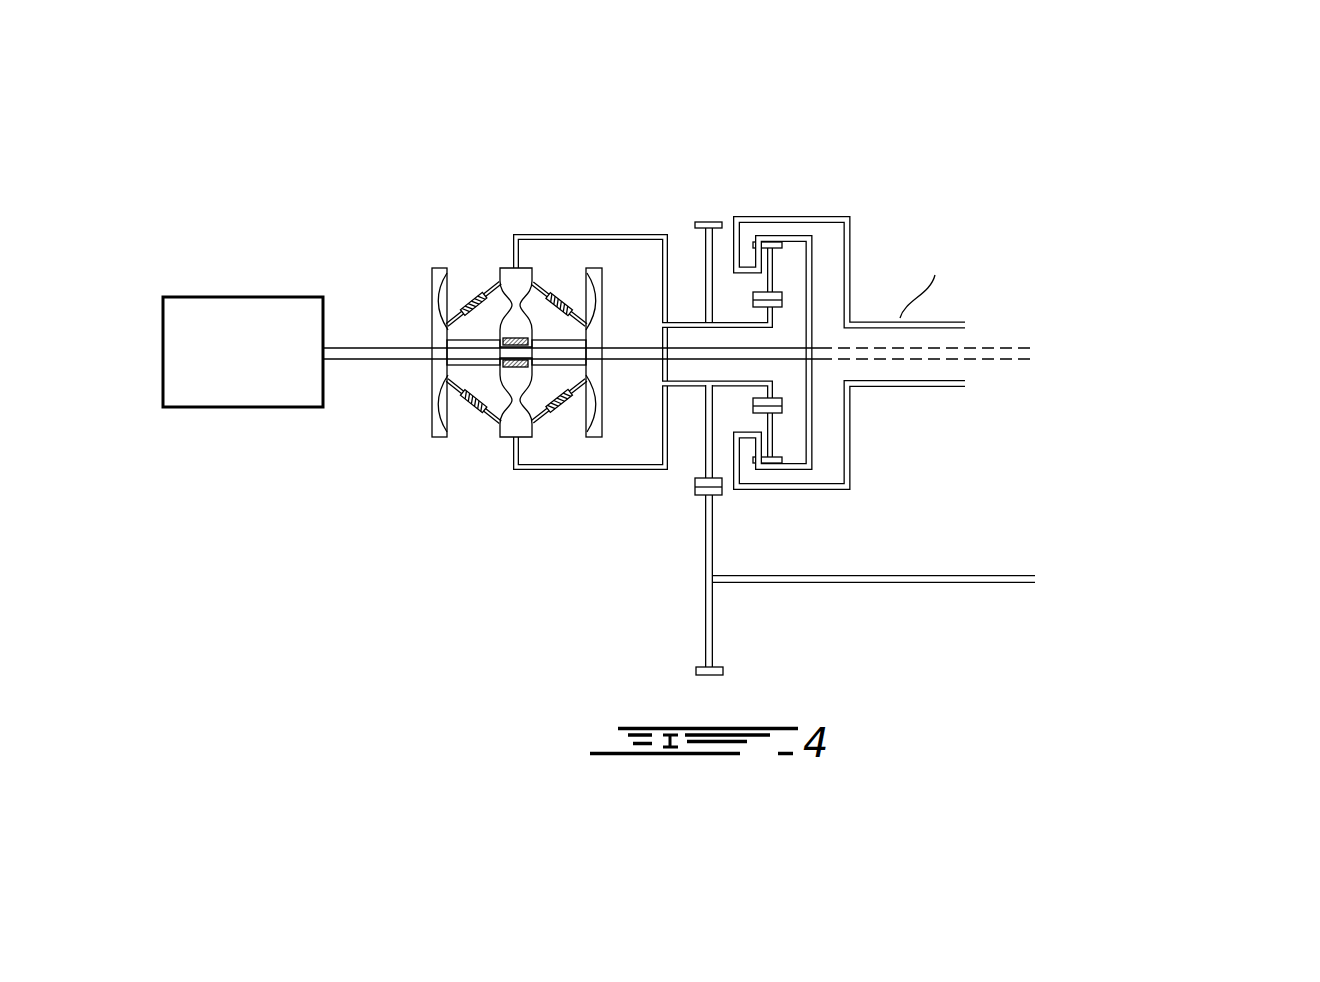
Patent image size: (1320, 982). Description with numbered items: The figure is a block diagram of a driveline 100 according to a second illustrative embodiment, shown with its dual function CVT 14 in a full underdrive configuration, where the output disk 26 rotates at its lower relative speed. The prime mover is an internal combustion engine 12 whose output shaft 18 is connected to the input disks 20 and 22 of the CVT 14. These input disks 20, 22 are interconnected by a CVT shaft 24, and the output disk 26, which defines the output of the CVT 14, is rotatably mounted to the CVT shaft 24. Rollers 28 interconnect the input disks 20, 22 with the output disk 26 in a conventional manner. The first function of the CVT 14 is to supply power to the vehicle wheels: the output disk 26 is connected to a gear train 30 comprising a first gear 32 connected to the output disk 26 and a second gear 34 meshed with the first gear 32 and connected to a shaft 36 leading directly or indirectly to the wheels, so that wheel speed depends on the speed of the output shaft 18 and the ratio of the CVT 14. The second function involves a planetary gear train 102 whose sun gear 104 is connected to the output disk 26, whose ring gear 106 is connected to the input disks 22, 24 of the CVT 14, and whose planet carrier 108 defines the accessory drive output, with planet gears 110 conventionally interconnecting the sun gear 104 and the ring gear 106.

The driveline 100 is at (709, 363).
The planetary gear train 102 is at (788, 311).
The sun gear 104 is at (770, 310).
The ring gear 106 is at (808, 273).
The planet carrier 108 is at (738, 240).
The planet gears 110 is at (767, 282).
The internal combustion engine 12 is at (232, 407).
The dual function CVT 14 is at (511, 378).
The output shaft 18 is at (363, 359).
The input disk 20 is at (440, 438).
The input disk 22 is at (593, 432).
The CVT shaft 24 is at (453, 352).
The output disk 26 is at (513, 428).
The rollers 28 is at (560, 300).
The gear train 30 is at (687, 504).
The first gear 32 is at (705, 437).
The second gear 34 is at (713, 620).
The shaft 36 is at (905, 578).